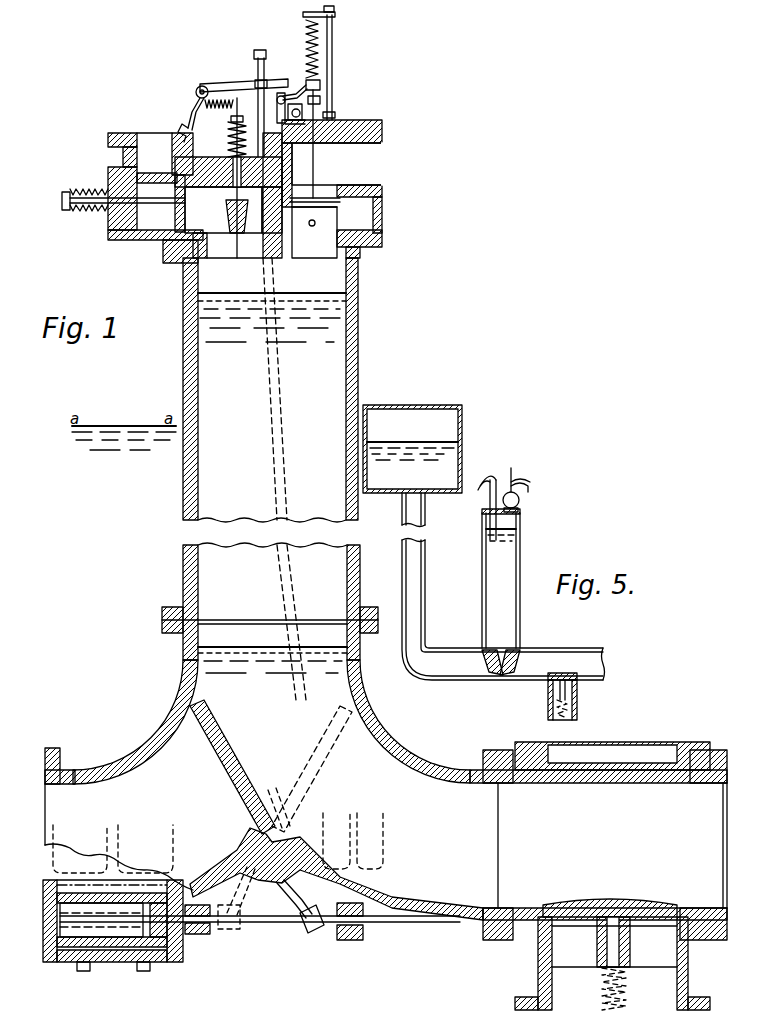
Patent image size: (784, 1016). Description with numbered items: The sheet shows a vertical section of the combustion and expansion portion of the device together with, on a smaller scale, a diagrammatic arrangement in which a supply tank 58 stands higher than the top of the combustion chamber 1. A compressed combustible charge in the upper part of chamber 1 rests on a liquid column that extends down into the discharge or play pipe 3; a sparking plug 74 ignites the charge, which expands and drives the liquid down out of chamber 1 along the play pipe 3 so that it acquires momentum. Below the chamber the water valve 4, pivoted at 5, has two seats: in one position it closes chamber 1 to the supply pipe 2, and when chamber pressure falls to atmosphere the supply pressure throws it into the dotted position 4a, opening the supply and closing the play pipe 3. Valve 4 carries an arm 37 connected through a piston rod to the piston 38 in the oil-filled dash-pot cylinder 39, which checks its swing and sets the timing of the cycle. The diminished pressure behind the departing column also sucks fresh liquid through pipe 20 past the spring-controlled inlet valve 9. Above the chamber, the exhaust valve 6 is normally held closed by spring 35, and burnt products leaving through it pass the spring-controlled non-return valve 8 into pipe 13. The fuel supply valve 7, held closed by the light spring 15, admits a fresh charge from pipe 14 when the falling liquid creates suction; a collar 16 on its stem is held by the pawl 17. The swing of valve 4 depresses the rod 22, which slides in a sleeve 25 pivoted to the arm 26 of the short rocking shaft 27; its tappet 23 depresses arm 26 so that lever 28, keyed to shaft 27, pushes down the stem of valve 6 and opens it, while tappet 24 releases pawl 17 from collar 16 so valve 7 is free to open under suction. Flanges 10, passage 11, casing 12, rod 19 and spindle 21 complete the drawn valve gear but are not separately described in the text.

In FIG. 1, the combustion chamber 1 is at (270, 390).
In FIG. 1, the supply pipe 2 is at (214, 775).
In FIG. 1, the discharge or play pipe 3 is at (537, 800).
In FIG. 1, the water valve 4 is at (232, 752).
In FIG. 5, the water valve 4 is at (486, 660).
In FIG. 1, the valve position 4a is at (318, 760).
In FIG. 5, the valve position 4a is at (512, 660).
In FIG. 1, the pivot 5 is at (240, 845).
In FIG. 1, the exhaust valve 6 is at (237, 258).
In FIG. 5, the exhaust valve 6 is at (493, 538).
In FIG. 1, the fuel supply valve 7 is at (360, 216).
In FIG. 5, the fuel supply valve 7 is at (520, 505).
In FIG. 1, the non-return valve 8 is at (176, 190).
In FIG. 1, the inlet valve 9 is at (587, 900).
In FIG. 5, the inlet valve 9 is at (565, 680).
In FIG. 1, the flange 10 is at (160, 252).
In FIG. 1, the valve chamber 11 is at (228, 195).
In FIG. 1, the casing 12 is at (335, 128).
In FIG. 1, the exhaust pipe 13 is at (150, 171).
In FIG. 1, the fuel pipe 14 is at (337, 188).
In FIG. 1, the spring 15 is at (320, 40).
In FIG. 1, the collar 16 is at (295, 82).
In FIG. 1, the pawl 17 is at (304, 110).
In FIG. 1, the rod 19 is at (333, 60).
In FIG. 1, the pipe 20 is at (612, 963).
In FIG. 5, the pipe 20 is at (548, 700).
In FIG. 1, the spindle 21 is at (278, 812).
In FIG. 1, the rod 22 is at (276, 582).
In FIG. 1, the tappet 23 is at (260, 50).
In FIG. 1, the tappet 24 is at (231, 106).
In FIG. 1, the sleeve 25 is at (265, 82).
In FIG. 1, the arm 26 is at (242, 82).
In FIG. 1, the rocking shaft 27 is at (196, 90).
In FIG. 1, the lever 28 is at (205, 84).
In FIG. 1, the spring 35 is at (230, 140).
In FIG. 1, the arm 37 is at (280, 892).
In FIG. 1, the piston 38 is at (188, 940).
In FIG. 1, the dash-pot cylinder 39 is at (118, 930).
In FIG. 5, the supply tank 58 is at (463, 436).
In FIG. 1, the sparking plug 74 is at (314, 232).